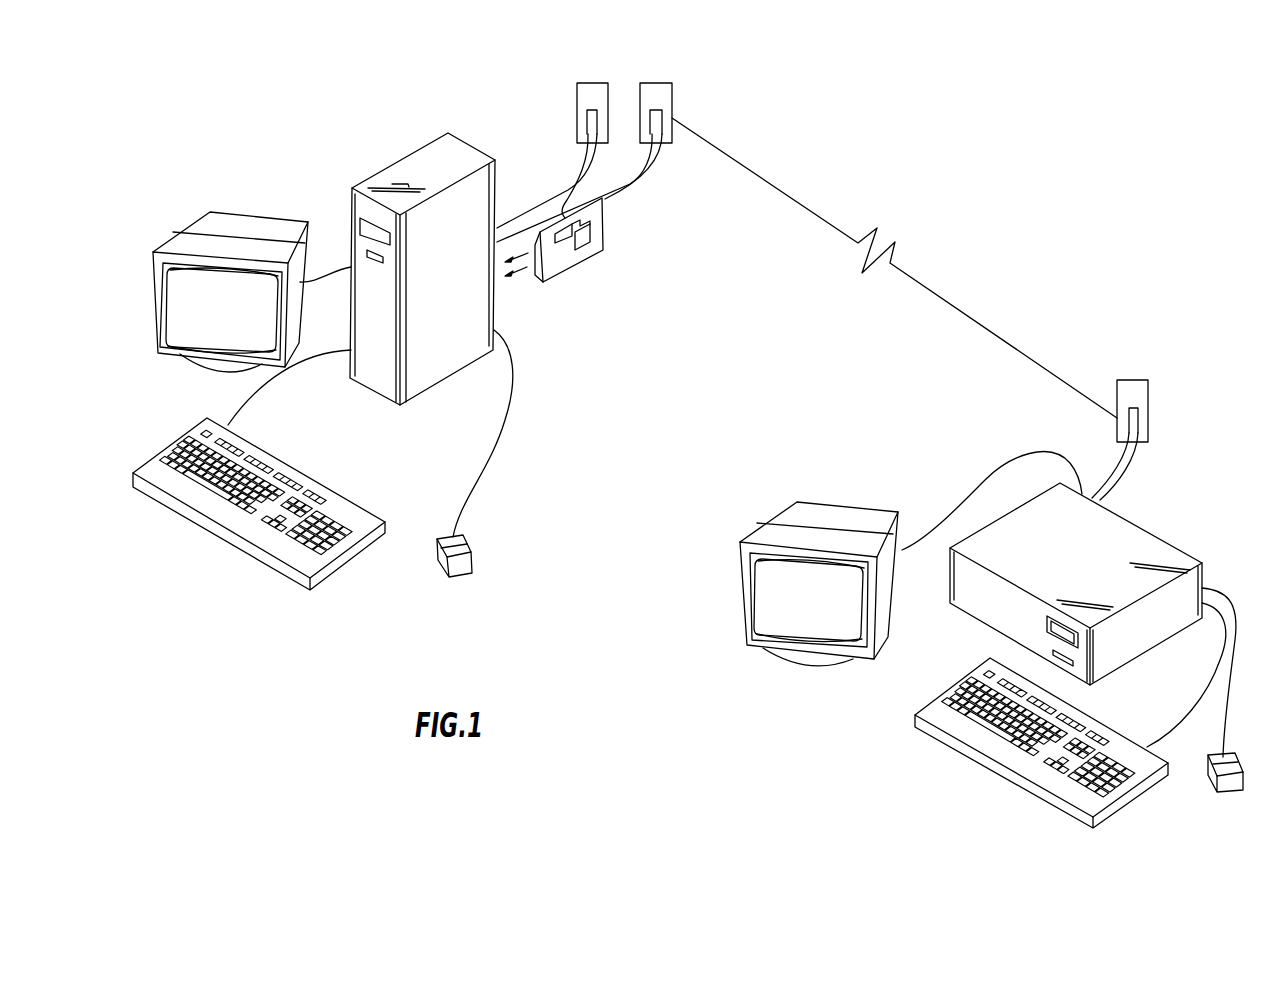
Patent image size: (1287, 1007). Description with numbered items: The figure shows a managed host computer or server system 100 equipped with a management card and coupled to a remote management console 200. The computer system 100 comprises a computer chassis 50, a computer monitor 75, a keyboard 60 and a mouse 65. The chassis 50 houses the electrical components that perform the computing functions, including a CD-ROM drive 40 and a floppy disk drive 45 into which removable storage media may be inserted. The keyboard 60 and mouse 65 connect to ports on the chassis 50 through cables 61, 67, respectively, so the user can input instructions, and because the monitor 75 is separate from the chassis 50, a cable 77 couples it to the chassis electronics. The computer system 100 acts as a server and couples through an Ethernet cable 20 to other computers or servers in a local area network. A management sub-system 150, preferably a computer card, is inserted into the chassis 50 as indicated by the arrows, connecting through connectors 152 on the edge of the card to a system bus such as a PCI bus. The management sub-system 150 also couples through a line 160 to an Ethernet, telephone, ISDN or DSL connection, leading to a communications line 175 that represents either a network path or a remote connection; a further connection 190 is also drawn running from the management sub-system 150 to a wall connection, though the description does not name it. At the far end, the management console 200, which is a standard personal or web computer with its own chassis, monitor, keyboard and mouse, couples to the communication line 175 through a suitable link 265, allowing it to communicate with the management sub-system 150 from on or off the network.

The computer system 100 is at (207, 158).
The computer monitor 75 is at (182, 223).
The cable 77 is at (327, 280).
The computer chassis 50 is at (387, 162).
The CD-ROM drive 40 is at (367, 217).
The floppy disk drive 45 is at (367, 248).
The keyboard 60 is at (182, 517).
The cable 61 is at (273, 388).
The mouse 65 is at (457, 573).
The cable 67 is at (460, 448).
The Ethernet cable 20 is at (545, 203).
The telephone line to wall jack 190 is at (572, 200).
The line 160 is at (637, 190).
The management sub-system 150 is at (587, 248).
The connectors 152 is at (535, 276).
The communications line 175 is at (967, 312).
The management console 200 is at (872, 715).
The link 265 is at (1135, 463).